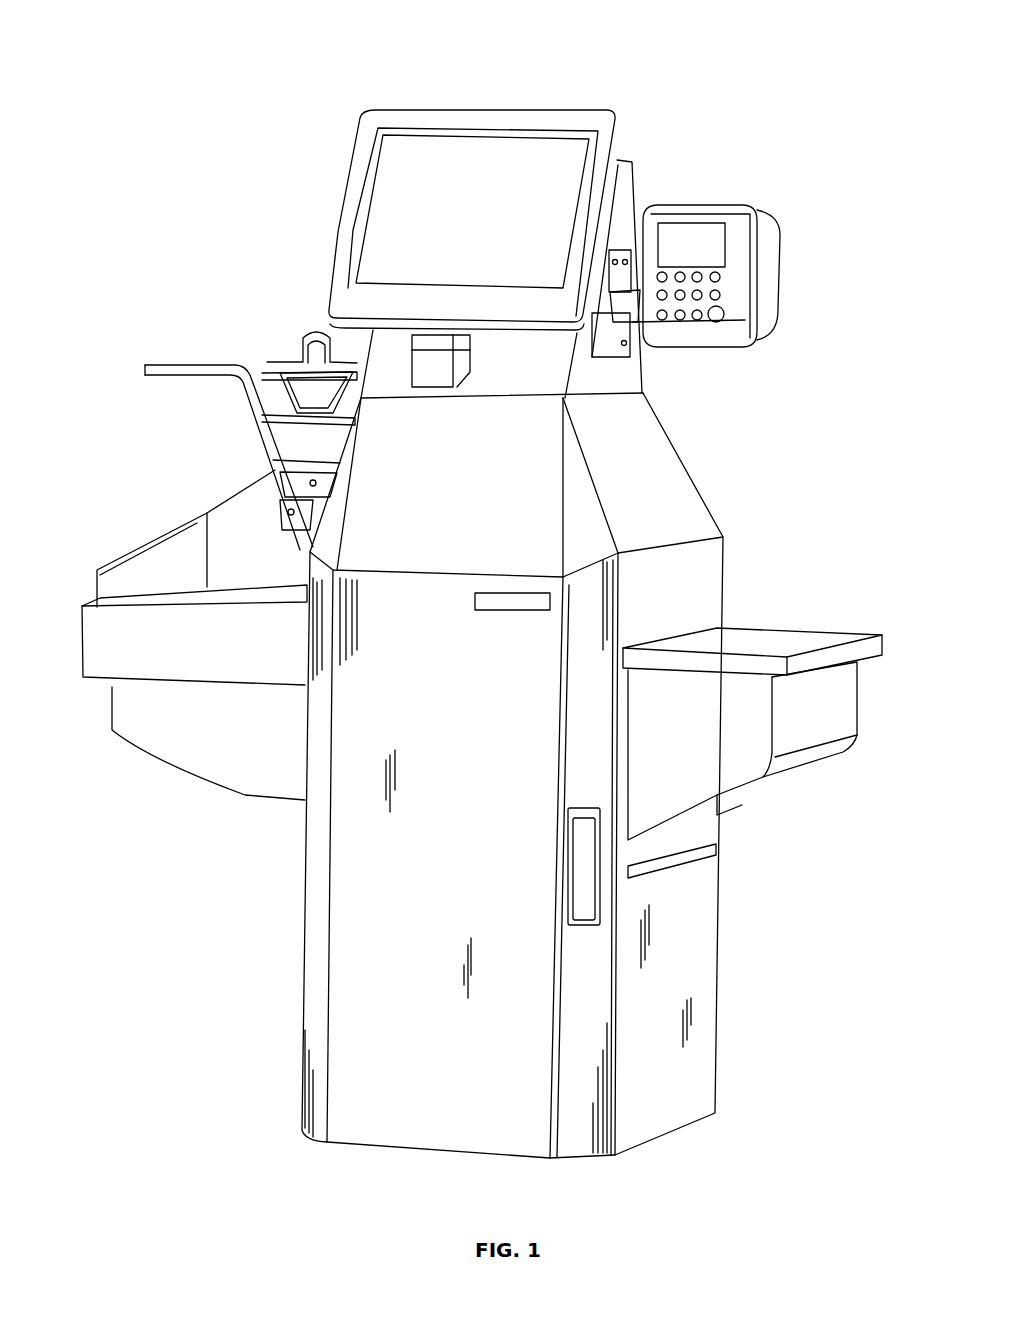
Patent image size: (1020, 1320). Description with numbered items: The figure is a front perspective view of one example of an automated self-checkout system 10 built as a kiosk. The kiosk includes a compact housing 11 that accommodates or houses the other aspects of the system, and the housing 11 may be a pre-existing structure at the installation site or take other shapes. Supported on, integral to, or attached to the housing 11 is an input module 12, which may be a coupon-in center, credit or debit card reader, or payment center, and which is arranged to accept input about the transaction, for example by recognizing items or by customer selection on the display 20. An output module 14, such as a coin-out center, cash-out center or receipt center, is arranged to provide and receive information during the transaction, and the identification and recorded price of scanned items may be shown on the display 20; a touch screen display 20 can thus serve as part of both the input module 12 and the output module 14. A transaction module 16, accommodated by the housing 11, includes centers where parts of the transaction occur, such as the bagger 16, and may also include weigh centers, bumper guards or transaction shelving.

The self-checkout system 10 is at (645, 92).
The housing 11 is at (313, 938).
The input module 12 is at (440, 367).
The output module 14 is at (550, 600).
The transaction module 16 is at (700, 203).
The display 20 is at (417, 240).